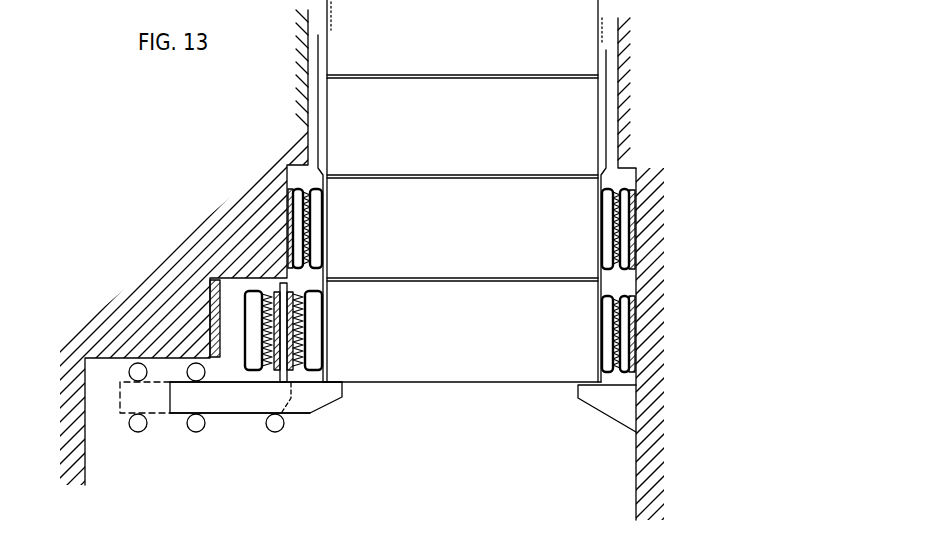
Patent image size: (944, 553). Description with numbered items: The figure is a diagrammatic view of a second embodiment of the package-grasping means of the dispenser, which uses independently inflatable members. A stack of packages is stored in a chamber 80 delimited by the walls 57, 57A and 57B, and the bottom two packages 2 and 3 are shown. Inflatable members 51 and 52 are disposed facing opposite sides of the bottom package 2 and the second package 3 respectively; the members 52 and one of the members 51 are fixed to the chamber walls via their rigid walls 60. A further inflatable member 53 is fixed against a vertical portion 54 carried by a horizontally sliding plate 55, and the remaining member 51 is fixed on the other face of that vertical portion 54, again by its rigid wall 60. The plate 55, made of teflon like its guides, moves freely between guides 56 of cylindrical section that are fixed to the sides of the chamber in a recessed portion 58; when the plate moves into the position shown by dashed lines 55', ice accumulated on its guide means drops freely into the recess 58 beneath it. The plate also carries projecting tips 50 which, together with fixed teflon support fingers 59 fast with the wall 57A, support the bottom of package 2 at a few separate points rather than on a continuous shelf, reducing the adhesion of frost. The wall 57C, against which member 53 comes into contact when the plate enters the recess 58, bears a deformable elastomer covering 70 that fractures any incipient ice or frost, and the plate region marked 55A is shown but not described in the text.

The bottom package 2 is at (461, 350).
The package 3 is at (575, 195).
The projecting tips 50 is at (350, 398).
The inflatable members 51 is at (310, 318).
The inflatable members 52 is at (315, 228).
The inflatable member 53 is at (253, 340).
The vertical portion 54 is at (283, 283).
The horizontally sliding plate 55 is at (258, 452).
The dashed-line position of the sliding plate 55' is at (98, 393).
The valve plate 55A is at (240, 395).
The guides 56 is at (133, 365).
The wall 57 is at (108, 413).
The wall 57A is at (630, 445).
The wall 57B is at (306, 116).
The wall 57C is at (212, 290).
The recessed portion 58 is at (136, 474).
The fixed support fingers 59 is at (612, 397).
The rigid wall 60 is at (292, 205).
The deformable covering 70 is at (220, 268).
The chamber 80 is at (534, 459).